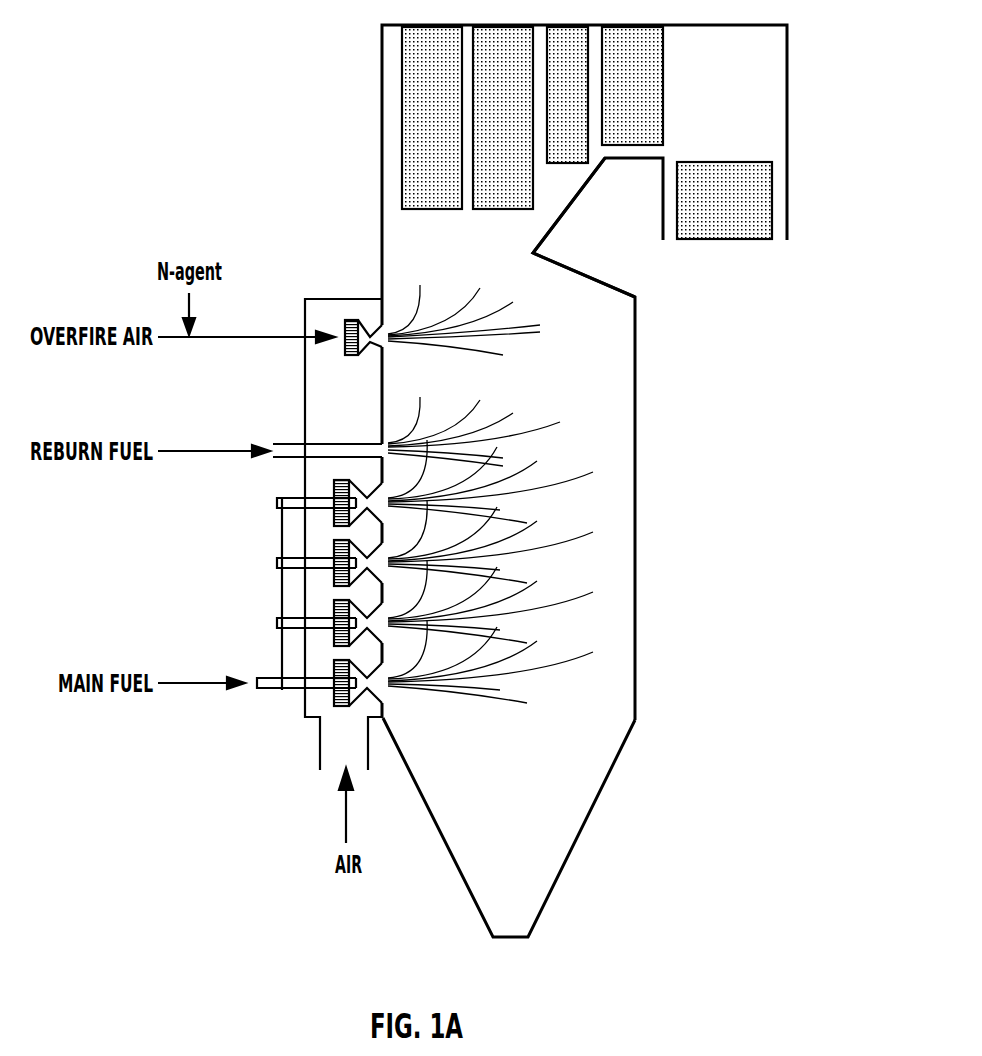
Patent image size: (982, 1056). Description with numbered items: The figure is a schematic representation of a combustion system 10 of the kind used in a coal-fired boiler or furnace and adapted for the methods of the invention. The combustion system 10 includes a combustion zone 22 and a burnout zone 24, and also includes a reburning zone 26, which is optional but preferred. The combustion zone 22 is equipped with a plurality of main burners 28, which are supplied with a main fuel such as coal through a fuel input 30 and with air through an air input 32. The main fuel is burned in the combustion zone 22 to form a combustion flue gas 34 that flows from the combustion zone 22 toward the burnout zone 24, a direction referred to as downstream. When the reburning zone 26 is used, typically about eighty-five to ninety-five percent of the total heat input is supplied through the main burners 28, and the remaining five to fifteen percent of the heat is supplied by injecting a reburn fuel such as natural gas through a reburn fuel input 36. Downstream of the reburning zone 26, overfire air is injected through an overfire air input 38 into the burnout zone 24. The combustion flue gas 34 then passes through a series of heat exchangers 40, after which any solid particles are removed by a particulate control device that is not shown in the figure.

The combustion system 10 is at (803, 61).
The heat exchangers 40 is at (488, 77).
The burnout zone 24 is at (552, 284).
The reburning zone 26 is at (565, 400).
The combustion zone 22 is at (593, 567).
The combustion flue gas 34 is at (565, 608).
The overfire air input 38 is at (350, 320).
The reburn fuel input 36 is at (277, 458).
The main burners 28 is at (273, 497).
The fuel input 30 is at (280, 690).
The air input 32 is at (331, 765).